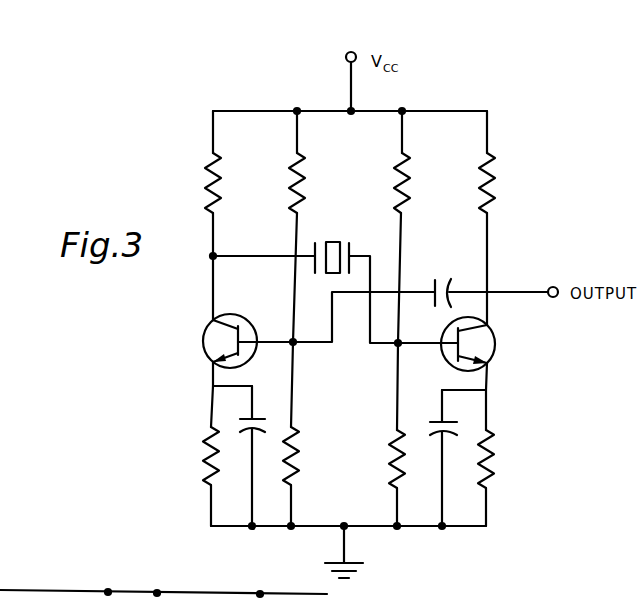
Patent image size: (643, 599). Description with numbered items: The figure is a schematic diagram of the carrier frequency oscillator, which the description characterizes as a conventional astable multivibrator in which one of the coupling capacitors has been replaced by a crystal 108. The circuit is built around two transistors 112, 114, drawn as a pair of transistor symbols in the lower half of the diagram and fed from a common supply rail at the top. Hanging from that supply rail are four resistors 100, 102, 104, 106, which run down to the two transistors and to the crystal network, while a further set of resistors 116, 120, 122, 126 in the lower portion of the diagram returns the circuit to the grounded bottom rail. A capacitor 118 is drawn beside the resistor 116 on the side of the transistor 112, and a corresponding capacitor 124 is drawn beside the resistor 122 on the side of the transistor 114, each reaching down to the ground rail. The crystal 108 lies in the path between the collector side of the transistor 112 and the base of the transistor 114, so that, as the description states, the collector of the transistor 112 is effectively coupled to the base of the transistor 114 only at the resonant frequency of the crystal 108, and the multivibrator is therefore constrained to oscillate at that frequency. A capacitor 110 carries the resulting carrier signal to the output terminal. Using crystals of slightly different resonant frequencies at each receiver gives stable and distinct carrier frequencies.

The resistor 100 is at (212, 203).
The resistor 102 is at (295, 204).
The resistor 104 is at (393, 200).
The resistor 106 is at (479, 206).
The crystal 108 is at (333, 240).
The capacitor 110 is at (442, 280).
The transistor 112 is at (204, 340).
The transistor 114 is at (495, 345).
The resistor 116 is at (204, 466).
The capacitor 118 is at (268, 418).
The resistor 120 is at (299, 459).
The resistor 122 is at (390, 456).
The capacitor 124 is at (430, 420).
The resistor 126 is at (492, 437).